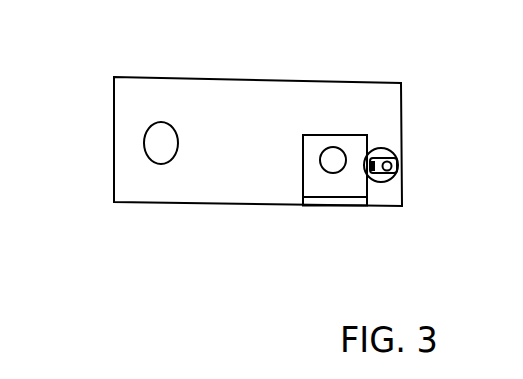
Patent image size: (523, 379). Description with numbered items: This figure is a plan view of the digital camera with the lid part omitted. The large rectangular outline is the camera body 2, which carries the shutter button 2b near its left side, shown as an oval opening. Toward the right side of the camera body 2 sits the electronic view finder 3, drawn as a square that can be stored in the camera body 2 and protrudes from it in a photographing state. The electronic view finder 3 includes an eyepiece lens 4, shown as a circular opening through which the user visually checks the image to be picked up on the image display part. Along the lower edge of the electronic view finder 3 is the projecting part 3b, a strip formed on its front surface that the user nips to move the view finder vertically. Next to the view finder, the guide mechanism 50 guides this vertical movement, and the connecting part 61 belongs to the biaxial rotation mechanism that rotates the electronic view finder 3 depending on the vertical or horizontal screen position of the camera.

The camera body 2 is at (368, 86).
The shutter button 2b is at (145, 142).
The electronic view finder 3 is at (318, 190).
The projecting part 3b is at (345, 203).
The eyepiece lens 4 is at (322, 159).
The guide mechanism 50 is at (383, 149).
The connecting part 61 is at (393, 181).